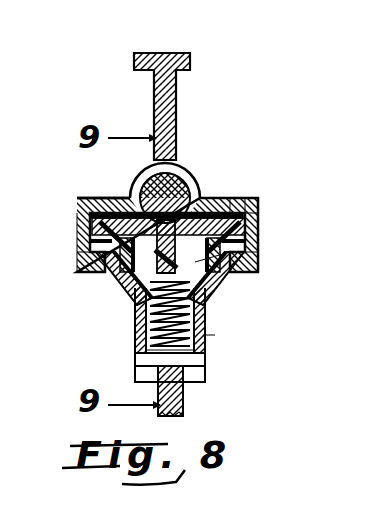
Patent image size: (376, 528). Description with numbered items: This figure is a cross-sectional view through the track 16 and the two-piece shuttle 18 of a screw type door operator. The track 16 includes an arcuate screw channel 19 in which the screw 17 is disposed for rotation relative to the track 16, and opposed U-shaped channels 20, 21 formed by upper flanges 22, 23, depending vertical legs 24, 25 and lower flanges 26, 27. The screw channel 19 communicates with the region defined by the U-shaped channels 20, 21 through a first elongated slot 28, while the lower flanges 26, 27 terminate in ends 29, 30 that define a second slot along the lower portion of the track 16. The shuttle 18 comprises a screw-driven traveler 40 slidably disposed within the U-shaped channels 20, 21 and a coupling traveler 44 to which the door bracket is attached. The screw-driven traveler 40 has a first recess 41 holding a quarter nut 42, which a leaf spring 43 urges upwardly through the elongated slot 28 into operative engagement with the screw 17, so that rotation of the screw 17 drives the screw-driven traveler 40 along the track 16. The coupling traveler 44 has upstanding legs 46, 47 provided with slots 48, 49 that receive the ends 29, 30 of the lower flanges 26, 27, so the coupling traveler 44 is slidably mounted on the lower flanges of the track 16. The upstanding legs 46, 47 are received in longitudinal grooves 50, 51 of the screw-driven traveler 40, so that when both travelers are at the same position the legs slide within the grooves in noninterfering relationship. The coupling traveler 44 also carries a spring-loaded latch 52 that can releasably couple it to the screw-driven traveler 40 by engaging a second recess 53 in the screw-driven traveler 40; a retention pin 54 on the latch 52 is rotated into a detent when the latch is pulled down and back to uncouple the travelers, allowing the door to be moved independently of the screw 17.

The track 16 is at (262, 200).
The screw 17 is at (178, 163).
The shuttle 18 is at (225, 335).
The screw channel 19 is at (180, 205).
The U-shaped channel 20 is at (76, 216).
The U-shaped channel 21 is at (262, 235).
The upper flange 22 is at (95, 204).
The upper flange 23 is at (262, 212).
The vertical leg 24 is at (80, 242).
The vertical leg 25 is at (258, 246).
The lower flange 26 is at (88, 264).
The lower flange 27 is at (262, 258).
The first elongated slot 28 is at (196, 205).
The end of lower flange 29 is at (100, 260).
The end of lower flange 30 is at (245, 276).
The screw-driven traveler 40 is at (248, 226).
The first recess 41 is at (218, 192).
The quarter nut 42 is at (142, 167).
The leaf spring 43 is at (137, 188).
The coupling traveler 44 is at (212, 372).
The upstanding leg 46 is at (132, 292).
The upstanding leg 47 is at (218, 300).
The slot 48 is at (124, 278).
The slot 49 is at (232, 278).
The longitudinal groove 50 is at (88, 223).
The longitudinal groove 51 is at (228, 198).
The spring-loaded latch 52 is at (185, 404).
The second recess 53 is at (150, 298).
The retention pin 54 is at (207, 358).